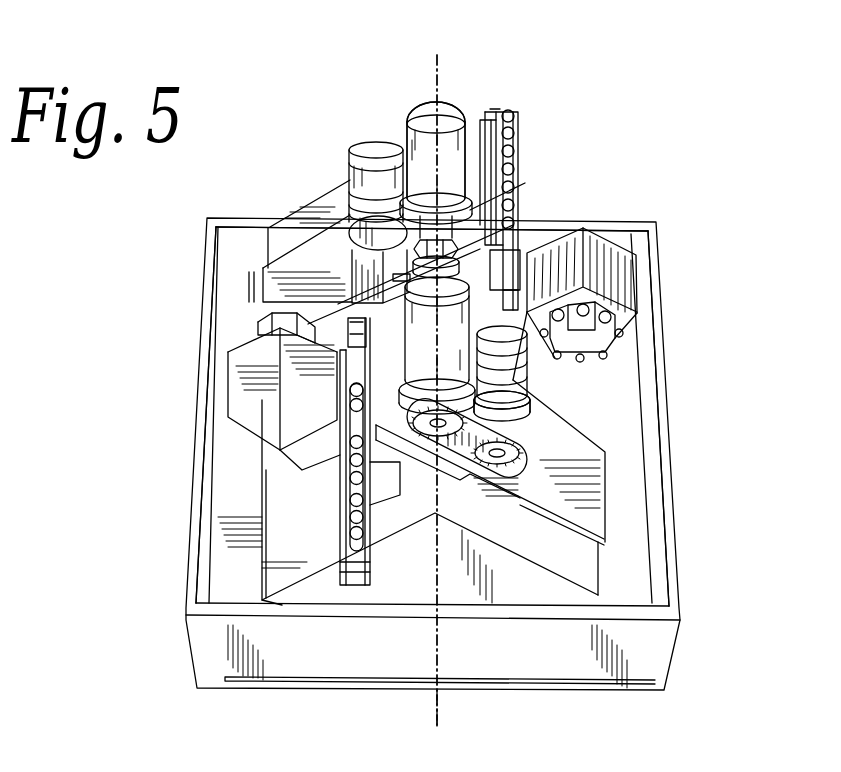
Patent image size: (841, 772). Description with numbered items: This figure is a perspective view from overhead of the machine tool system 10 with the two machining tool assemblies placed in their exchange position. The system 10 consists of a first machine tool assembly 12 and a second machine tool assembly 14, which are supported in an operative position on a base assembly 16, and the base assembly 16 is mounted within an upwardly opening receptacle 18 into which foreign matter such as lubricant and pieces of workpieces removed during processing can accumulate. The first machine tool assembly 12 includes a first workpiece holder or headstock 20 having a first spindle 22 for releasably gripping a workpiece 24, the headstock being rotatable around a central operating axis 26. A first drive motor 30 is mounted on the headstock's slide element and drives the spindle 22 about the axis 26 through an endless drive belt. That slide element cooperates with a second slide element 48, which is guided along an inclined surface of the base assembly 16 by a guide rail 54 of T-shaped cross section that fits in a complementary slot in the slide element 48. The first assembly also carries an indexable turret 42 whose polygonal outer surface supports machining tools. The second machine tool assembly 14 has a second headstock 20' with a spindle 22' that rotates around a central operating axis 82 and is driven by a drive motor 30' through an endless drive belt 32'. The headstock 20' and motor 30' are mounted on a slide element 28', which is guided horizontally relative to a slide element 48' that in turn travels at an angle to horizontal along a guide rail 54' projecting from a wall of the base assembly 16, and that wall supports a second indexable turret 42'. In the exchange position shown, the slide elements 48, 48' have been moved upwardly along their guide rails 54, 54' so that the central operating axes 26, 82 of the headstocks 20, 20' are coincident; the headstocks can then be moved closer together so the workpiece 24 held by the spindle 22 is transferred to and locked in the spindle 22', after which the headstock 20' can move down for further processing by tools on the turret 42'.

The system 10 is at (488, 76).
The first machine tool assembly 12 is at (330, 130).
The second machine tool assembly 14 is at (538, 380).
The base assembly 16 is at (516, 579).
The upwardly opening receptacle 18 is at (480, 631).
The first workpiece holder/headstock 20 is at (436, 170).
The second workpiece holder/headstock 20' is at (437, 345).
The first spindle 22 is at (509, 179).
The spindle 22' is at (547, 408).
The workpiece 24 is at (450, 271).
The central operating axis 26 is at (434, 84).
The slide element 28' is at (223, 399).
The first drive motor 30 is at (337, 191).
The drive motor 30' is at (613, 378).
The endless drive belt 32' is at (568, 468).
The indexable turret 42 is at (629, 295).
The indexable turret 42' is at (211, 317).
The second slide element 48 is at (366, 232).
The slide element 48' is at (491, 502).
The guide rail 54 is at (270, 241).
The guide rail 54' is at (642, 427).
The central operating axis 82 is at (436, 716).